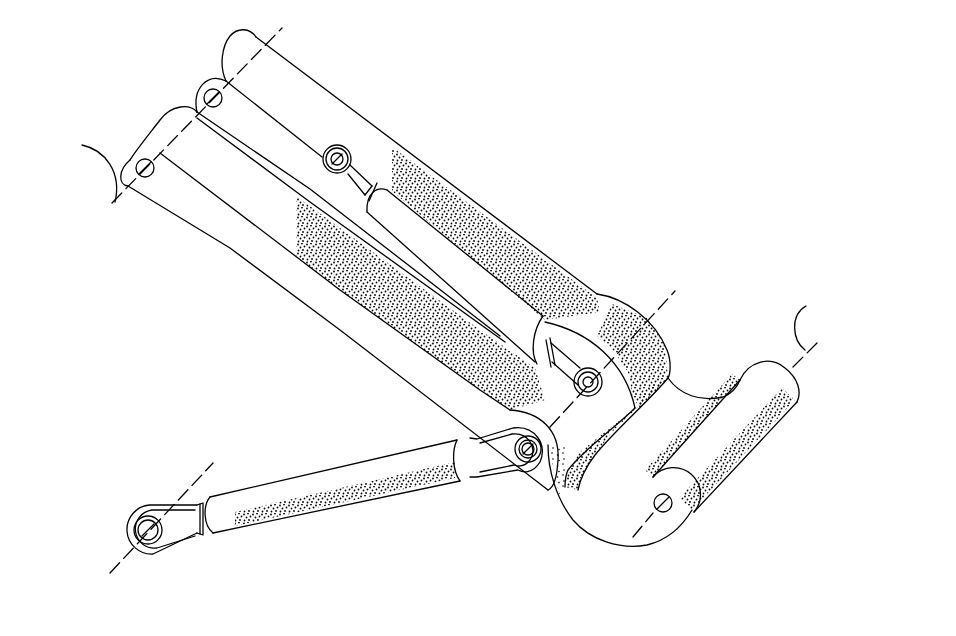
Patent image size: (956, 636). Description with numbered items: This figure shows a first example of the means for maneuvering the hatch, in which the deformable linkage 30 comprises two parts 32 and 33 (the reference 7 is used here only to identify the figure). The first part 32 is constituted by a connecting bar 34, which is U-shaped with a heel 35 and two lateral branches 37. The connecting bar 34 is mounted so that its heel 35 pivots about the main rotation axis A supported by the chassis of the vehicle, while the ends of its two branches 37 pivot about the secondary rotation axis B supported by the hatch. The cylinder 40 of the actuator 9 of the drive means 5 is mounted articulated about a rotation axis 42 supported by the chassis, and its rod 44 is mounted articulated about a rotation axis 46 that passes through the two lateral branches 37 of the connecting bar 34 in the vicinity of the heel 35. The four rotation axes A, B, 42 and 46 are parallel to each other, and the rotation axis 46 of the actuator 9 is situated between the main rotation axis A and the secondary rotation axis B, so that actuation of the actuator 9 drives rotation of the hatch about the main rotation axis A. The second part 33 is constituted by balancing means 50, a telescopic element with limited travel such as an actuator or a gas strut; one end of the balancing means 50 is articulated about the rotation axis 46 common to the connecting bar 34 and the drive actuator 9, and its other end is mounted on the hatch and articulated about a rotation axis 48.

The drive means 5 is at (310, 504).
The link assembly 7 is at (443, 321).
The actuator 9 is at (335, 522).
The deformable linkage 30 is at (563, 308).
The first part 32 is at (359, 259).
The second part 33 is at (433, 226).
The connecting bar 34 is at (385, 360).
The heel 35 is at (590, 523).
The lateral branches 37 is at (300, 74).
The cylinder 40 is at (248, 527).
The rotation axis 42 is at (141, 548).
The rod 44 is at (492, 457).
The rotation axis 46 is at (665, 305).
The rotation axis 48 is at (380, 112).
The balancing means 50 is at (397, 212).